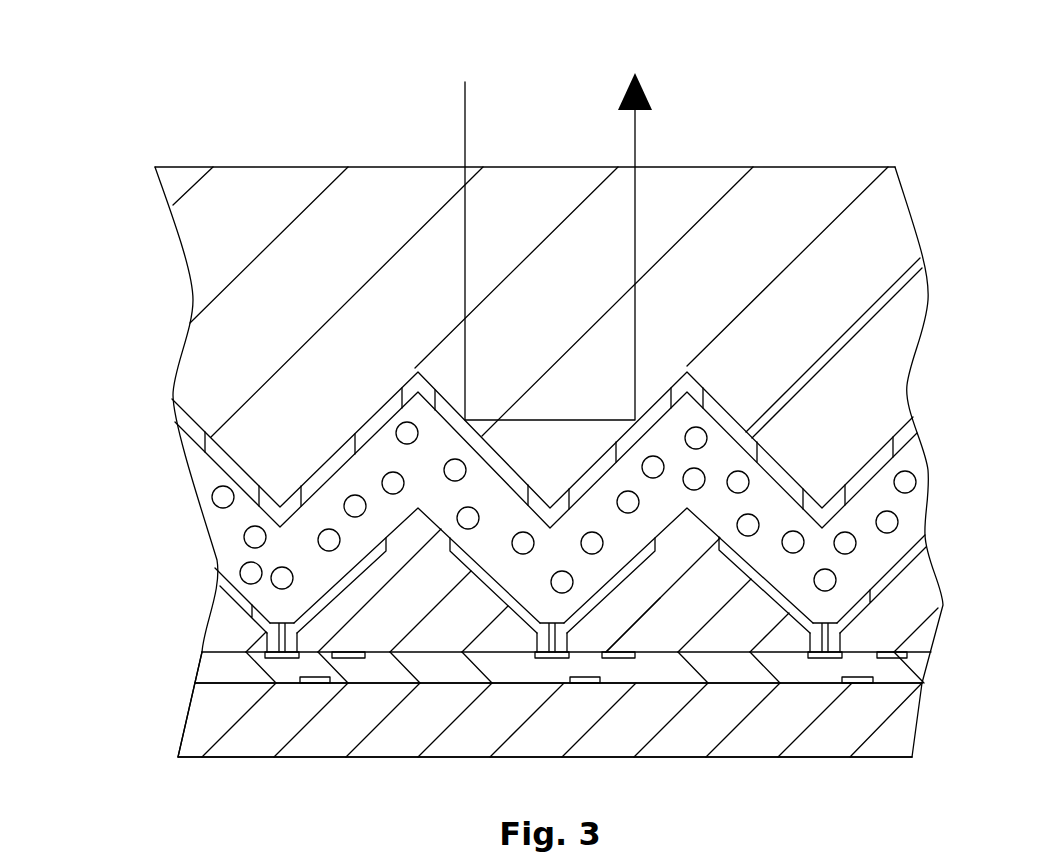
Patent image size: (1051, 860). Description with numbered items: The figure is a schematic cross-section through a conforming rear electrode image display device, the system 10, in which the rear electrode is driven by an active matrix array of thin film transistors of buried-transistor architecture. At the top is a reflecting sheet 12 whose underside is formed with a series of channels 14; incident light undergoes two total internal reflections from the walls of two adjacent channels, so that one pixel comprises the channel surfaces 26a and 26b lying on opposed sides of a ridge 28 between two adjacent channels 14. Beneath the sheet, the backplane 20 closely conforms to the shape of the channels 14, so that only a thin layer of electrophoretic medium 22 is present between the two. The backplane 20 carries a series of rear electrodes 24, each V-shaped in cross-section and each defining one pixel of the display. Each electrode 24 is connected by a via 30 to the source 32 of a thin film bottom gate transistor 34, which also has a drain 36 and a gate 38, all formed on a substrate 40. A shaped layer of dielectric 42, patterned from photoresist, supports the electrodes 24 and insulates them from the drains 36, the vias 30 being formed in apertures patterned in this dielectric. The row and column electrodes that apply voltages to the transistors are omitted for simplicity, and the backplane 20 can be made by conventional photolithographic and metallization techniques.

The system 10 is at (138, 500).
The reflecting sheet 12 is at (549, 396).
The channels 14 is at (690, 417).
The backplane 20 is at (128, 675).
The electrophoretic medium 22 is at (918, 505).
The rear electrodes 24 is at (893, 570).
The channel surface 26a is at (921, 262).
The channel surface 26b is at (880, 453).
The ridge 28 is at (850, 470).
The via 30 is at (842, 637).
The source 32 is at (810, 658).
The thin film bottom gate transistor 34 is at (252, 680).
The drain 36 is at (880, 656).
The gate 38 is at (855, 686).
The substrate 40 is at (550, 720).
The dielectric layer 42 is at (655, 620).